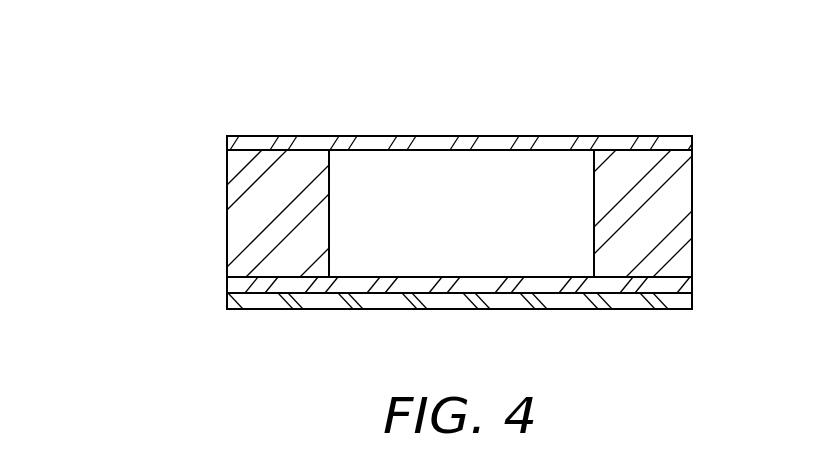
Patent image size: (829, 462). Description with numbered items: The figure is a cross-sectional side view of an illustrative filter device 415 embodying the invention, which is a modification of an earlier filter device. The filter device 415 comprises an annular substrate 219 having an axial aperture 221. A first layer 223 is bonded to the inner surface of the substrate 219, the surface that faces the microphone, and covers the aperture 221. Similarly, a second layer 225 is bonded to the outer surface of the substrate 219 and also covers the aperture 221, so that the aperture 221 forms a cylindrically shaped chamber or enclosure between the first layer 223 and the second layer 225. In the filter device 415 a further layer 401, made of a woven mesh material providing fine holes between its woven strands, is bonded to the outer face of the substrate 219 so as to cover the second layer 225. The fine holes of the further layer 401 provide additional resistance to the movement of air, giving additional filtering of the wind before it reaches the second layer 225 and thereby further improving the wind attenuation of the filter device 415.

The filter device 415 is at (77, 48).
The annular substrate 219 is at (678, 200).
The first layer 223 is at (369, 143).
The axial aperture 221 is at (472, 163).
The second layer 225 is at (470, 285).
The further layer 401 is at (636, 302).